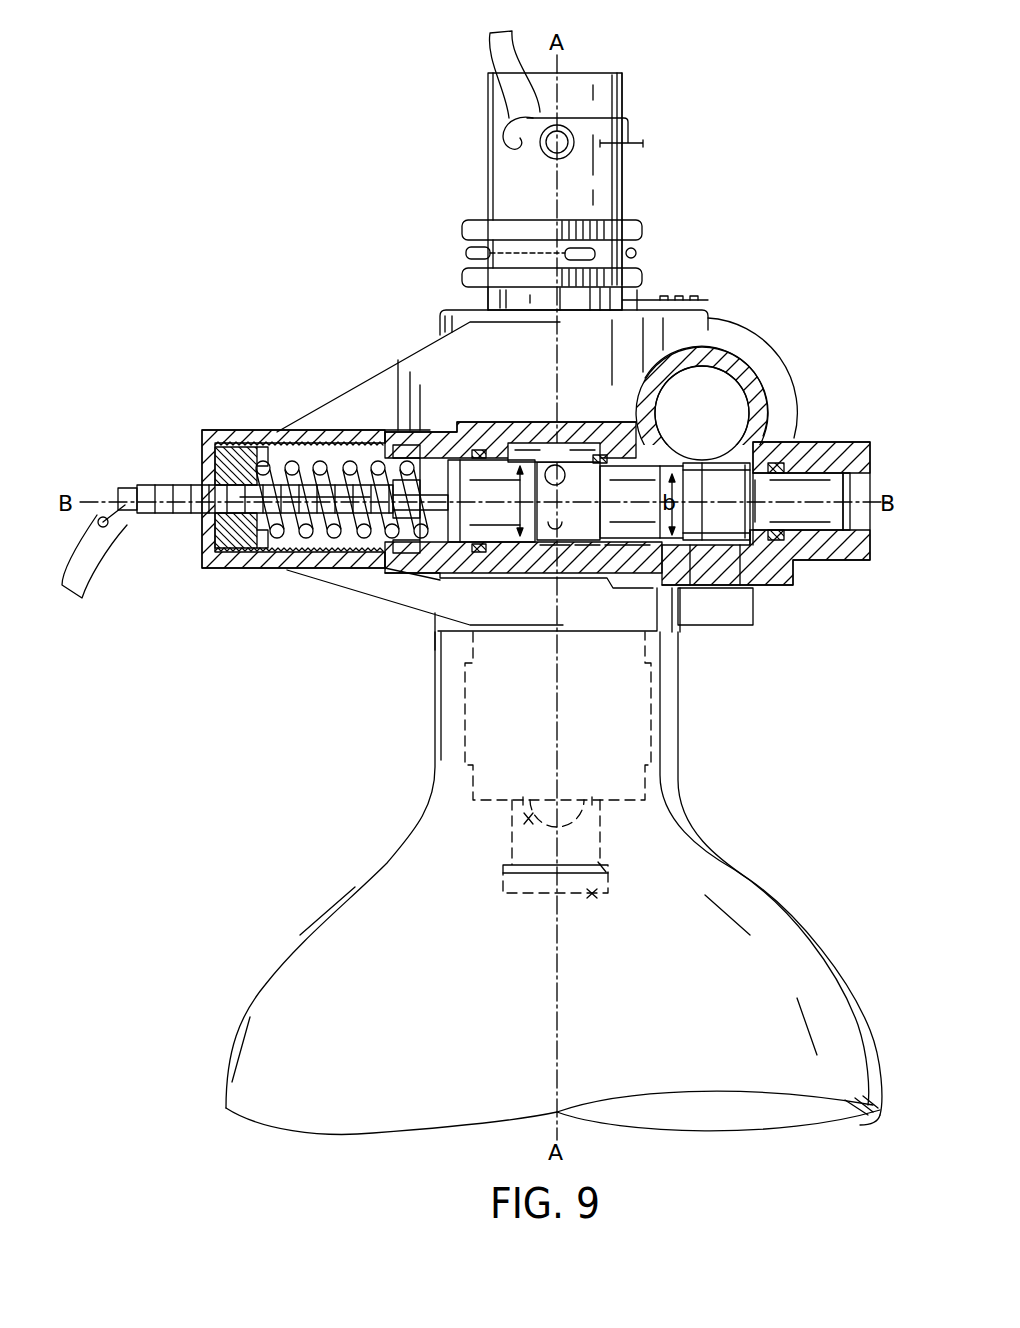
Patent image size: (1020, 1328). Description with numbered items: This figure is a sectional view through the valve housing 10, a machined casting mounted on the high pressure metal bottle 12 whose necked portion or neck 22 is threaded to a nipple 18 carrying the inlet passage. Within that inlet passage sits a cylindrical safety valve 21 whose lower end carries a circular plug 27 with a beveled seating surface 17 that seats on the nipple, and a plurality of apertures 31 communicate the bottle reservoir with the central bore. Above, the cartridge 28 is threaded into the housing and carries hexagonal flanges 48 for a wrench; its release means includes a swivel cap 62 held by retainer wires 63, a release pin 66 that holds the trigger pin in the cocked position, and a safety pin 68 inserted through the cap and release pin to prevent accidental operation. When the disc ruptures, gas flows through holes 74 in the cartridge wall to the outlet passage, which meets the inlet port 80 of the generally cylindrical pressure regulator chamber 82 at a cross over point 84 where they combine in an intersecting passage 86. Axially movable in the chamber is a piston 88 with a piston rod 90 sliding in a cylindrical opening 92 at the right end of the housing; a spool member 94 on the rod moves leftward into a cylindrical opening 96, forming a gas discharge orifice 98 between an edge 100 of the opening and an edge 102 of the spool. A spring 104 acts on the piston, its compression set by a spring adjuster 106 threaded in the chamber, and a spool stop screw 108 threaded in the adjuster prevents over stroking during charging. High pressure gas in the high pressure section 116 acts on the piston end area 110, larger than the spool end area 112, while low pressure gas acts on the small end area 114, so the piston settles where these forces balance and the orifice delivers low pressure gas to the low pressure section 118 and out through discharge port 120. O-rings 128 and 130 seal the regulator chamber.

The valve housing 10 is at (436, 316).
The high pressure container or metal bottle 12 is at (782, 925).
The beveled seating surface 17 is at (603, 868).
The nipple 18 is at (650, 745).
The safety valve 21 is at (497, 890).
The neck 22 is at (437, 720).
The circular plug 27 is at (592, 893).
The cartridge 28 is at (632, 187).
The apertures 31 is at (528, 818).
The hexagonal flanges 48 is at (642, 278).
The swivel cap 62 is at (612, 70).
The retainer wires 63 is at (470, 253).
The release pin 66 is at (548, 148).
The safety pin 68 is at (620, 118).
The holes 74 is at (550, 470).
The inlet port 80 is at (580, 537).
The pressure regulator chamber 82 is at (484, 555).
The cross over point 84 is at (587, 475).
The intersecting passage 86 is at (600, 442).
The piston 88 is at (460, 462).
The piston rod 90 is at (820, 478).
The cylindrical opening 92 is at (843, 540).
The spool member 94 is at (737, 560).
The cylindrical opening 96 is at (625, 540).
The gas discharge orifice 98 is at (670, 455).
The edge 100 is at (678, 595).
The edge 102 is at (715, 565).
The spring 104 is at (307, 542).
The spring adjuster 106 is at (232, 548).
The spool stop screw 108 is at (163, 487).
The end area 110 is at (540, 452).
The end area 112 is at (690, 520).
The small end area 114 is at (778, 502).
The high pressure section 116 is at (555, 542).
The low pressure section 118 is at (735, 605).
The discharge port 120 is at (728, 393).
The O-ring 128 is at (436, 590).
The O-ring 130 is at (778, 458).